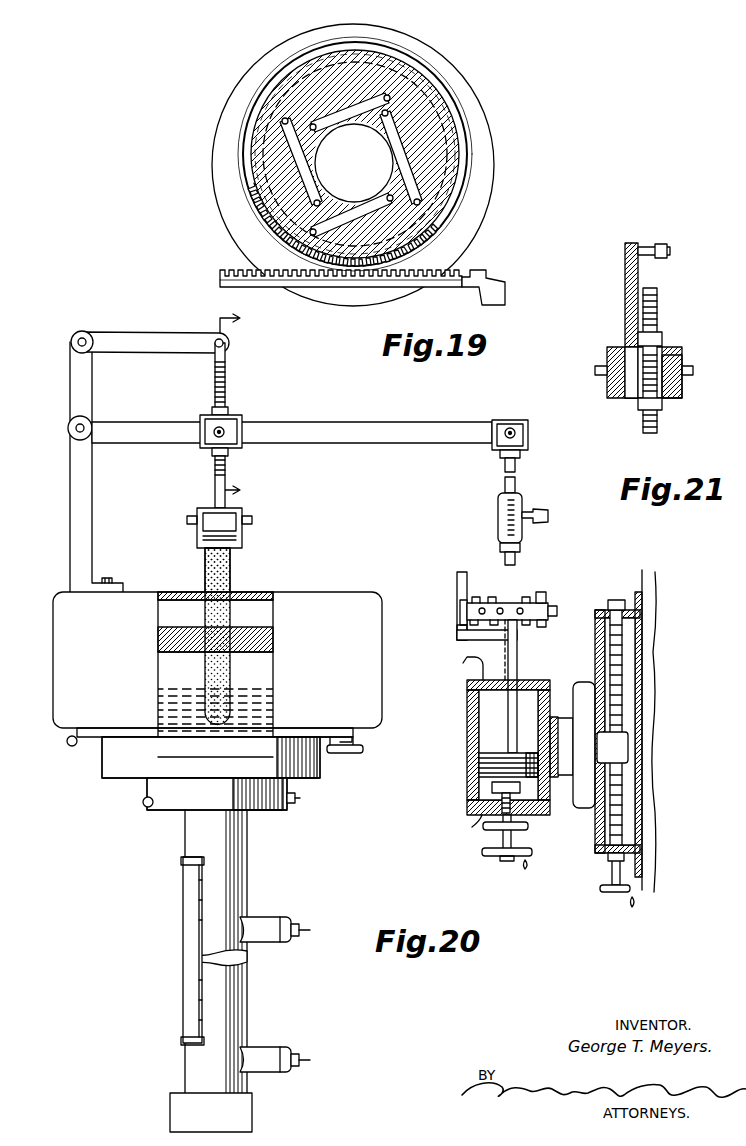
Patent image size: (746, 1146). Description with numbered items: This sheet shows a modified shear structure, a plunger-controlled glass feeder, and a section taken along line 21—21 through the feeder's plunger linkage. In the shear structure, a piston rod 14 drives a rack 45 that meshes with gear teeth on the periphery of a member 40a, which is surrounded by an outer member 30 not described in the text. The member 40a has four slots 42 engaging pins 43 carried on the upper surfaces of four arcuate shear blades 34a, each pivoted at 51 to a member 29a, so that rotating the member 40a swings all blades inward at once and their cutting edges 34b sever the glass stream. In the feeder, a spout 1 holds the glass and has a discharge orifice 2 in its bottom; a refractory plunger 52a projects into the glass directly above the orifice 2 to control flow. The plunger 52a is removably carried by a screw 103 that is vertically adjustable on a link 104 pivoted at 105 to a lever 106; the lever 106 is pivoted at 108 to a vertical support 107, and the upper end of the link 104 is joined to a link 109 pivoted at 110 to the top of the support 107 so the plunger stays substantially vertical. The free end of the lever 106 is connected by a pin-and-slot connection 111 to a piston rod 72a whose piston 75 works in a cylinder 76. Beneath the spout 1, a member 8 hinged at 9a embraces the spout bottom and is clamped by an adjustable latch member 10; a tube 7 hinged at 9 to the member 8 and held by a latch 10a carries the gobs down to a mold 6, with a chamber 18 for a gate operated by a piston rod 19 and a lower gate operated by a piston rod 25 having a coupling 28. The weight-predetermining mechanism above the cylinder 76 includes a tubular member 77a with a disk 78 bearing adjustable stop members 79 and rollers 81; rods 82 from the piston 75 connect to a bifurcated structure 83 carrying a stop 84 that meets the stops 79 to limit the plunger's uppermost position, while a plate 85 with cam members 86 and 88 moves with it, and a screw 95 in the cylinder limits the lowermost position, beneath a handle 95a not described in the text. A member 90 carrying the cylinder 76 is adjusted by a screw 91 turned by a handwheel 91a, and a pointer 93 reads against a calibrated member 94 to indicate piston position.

In FIG. 20, the spout 1 is at (72, 674).
In FIG. 20, the glass discharge orifice 2 is at (207, 752).
In FIG. 20, the mold 6 is at (228, 1110).
In FIG. 20, the tube 7 is at (217, 983).
In FIG. 20, the member 8 is at (112, 760).
In FIG. 20, the hinge 9 is at (142, 804).
In FIG. 20, the hinge 9a is at (66, 742).
In FIG. 20, the adjustable latch member 10 is at (350, 758).
In FIG. 20, the adjustable latch 10a is at (291, 805).
In FIG. 19, the piston rod 14 is at (497, 285).
In FIG. 20, the chamber 18 is at (258, 924).
In FIG. 20, the piston rod 19 is at (304, 927).
In FIG. 20, the section line 21— 21 is at (244, 405).
In FIG. 20, the piston rod 25 is at (298, 1054).
In FIG. 20, the coupling 28 is at (185, 922).
In FIG. 19, the member 29a is at (477, 158).
In FIG. 19, the outer casing 30 is at (231, 127).
In FIG. 19, the shear blades 34a is at (447, 120).
In FIG. 19, the cutting edges 34b is at (318, 148).
In FIG. 19, the member 40a is at (460, 192).
In FIG. 19, the slots 42 is at (400, 115).
In FIG. 19, the pins 43 is at (387, 95).
In FIG. 19, the rack 45 is at (358, 279).
In FIG. 19, the pivot 51 is at (463, 135).
In FIG. 20, the plunger 52a is at (229, 568).
In FIG. 20, the piston rod 72a is at (504, 467).
In FIG. 20, the piston 75 is at (480, 757).
In FIG. 20, the cylinder 76 is at (468, 720).
In FIG. 20, the tubular member 77a is at (518, 670).
In FIG. 20, the disk 78 is at (542, 595).
In FIG. 20, the stop members 79 is at (546, 623).
In FIG. 20, the rollers 81 is at (556, 611).
In FIG. 20, the rods 82 is at (517, 656).
In FIG. 20, the bifurcated structure 83 is at (468, 641).
In FIG. 20, the stop 84 is at (505, 622).
In FIG. 20, the plate 85 is at (460, 612).
In FIG. 20, the cam member 86 is at (458, 595).
In FIG. 20, the second cam member 88 is at (458, 630).
In FIG. 20, the member 90 is at (582, 792).
In FIG. 20, the screw 91 is at (622, 695).
In FIG. 20, the handwheel 91a is at (617, 893).
In FIG. 20, the pointer 93 is at (539, 510).
In FIG. 20, the calibrated member 94 is at (510, 516).
In FIG. 20, the screw 95 is at (492, 785).
In FIG. 20, the valve handle 95a is at (482, 851).
In FIG. 20, the screw 103 is at (213, 466).
In FIG. 21, the screw 103 is at (658, 316).
In FIG. 20, the link 104 is at (222, 366).
In FIG. 21, the link 104 is at (625, 280).
In FIG. 20, the pivot 105 is at (226, 428).
In FIG. 21, the pivot 105 is at (672, 365).
In FIG. 20, the lever 106 is at (307, 435).
In FIG. 21, the lever 106 is at (683, 389).
In FIG. 20, the vertical support 107 is at (71, 500).
In FIG. 20, the pivot 108 is at (69, 424).
In FIG. 20, the link 109 is at (163, 334).
In FIG. 20, the pivot 110 is at (86, 336).
In FIG. 20, the pin-and-slot connection 111 is at (512, 428).